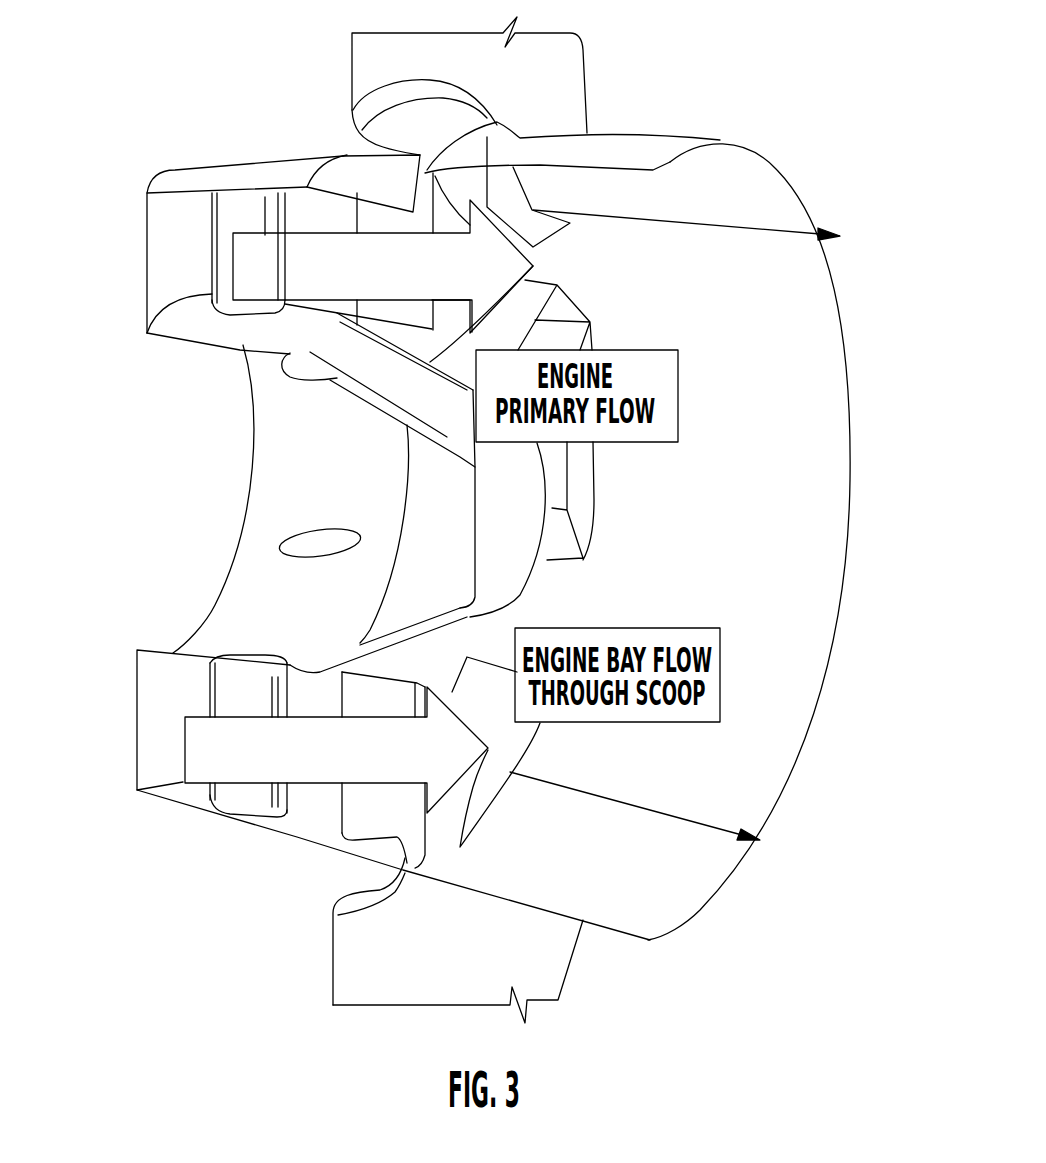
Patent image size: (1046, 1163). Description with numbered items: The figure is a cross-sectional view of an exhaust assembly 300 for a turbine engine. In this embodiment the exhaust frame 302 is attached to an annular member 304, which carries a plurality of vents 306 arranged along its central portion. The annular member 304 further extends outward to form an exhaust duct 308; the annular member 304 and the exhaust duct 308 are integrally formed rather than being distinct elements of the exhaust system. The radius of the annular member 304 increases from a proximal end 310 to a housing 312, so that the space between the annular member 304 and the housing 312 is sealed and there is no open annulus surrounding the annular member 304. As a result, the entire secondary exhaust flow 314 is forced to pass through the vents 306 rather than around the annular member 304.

The exhaust assembly 300 is at (137, 921).
The exhaust frame 302 is at (270, 172).
The annular member 304 is at (730, 185).
The vents 306 is at (577, 490).
The exhaust duct 308 is at (803, 613).
The proximal end 310 is at (313, 840).
The housing 312 is at (487, 133).
The secondary exhaust flow 314 is at (828, 237).